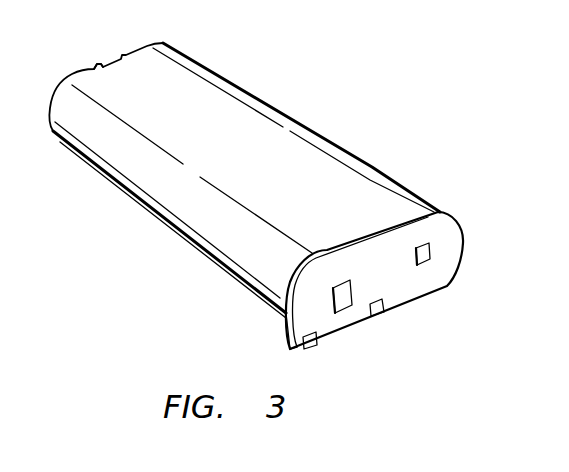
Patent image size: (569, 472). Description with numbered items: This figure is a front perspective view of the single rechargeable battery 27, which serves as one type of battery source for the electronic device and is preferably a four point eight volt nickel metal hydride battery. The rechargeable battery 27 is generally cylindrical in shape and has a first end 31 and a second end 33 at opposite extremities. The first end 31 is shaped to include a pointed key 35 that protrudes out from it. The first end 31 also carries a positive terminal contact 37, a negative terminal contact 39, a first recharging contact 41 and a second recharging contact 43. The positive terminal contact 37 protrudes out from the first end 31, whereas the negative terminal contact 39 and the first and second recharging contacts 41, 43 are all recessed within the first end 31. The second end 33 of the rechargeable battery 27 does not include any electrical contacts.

The rechargeable battery 27 is at (162, 256).
The first end 31 is at (439, 282).
The second end 33 is at (87, 71).
The pointed key 35 is at (290, 343).
The positive terminal contact 37 is at (430, 252).
The negative terminal contact 39 is at (343, 297).
The first recharging contact 41 is at (378, 317).
The second recharging contact 43 is at (313, 349).